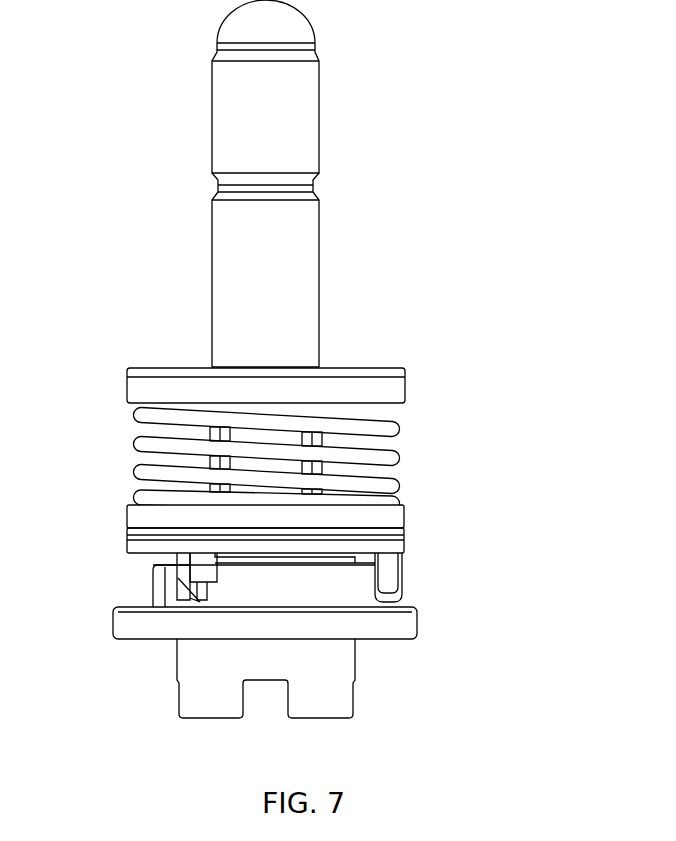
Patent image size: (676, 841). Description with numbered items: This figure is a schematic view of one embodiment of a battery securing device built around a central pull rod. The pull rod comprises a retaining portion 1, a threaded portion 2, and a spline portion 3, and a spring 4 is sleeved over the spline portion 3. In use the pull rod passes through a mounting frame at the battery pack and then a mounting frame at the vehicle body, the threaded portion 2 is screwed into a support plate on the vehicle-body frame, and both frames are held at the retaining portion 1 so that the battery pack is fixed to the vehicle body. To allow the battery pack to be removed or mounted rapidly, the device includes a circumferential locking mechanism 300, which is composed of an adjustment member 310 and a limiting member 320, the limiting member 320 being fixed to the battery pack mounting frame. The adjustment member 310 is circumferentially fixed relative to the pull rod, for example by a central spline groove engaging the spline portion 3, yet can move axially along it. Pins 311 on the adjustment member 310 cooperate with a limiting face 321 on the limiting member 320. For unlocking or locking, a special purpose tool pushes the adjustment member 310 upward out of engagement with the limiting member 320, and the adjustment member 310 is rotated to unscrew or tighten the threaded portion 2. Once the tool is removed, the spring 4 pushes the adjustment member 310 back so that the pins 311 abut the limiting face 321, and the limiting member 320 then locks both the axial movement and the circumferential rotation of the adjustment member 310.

The retaining portion 1 is at (292, 287).
The threaded portion 2 is at (290, 128).
The spline portion 3 is at (322, 418).
The spring 4 is at (272, 497).
The circumferential locking mechanism 300 is at (314, 611).
The adjustment member 310 is at (386, 542).
The pins 311 is at (180, 558).
The limiting member 320 is at (374, 623).
The limiting face 321 is at (170, 592).